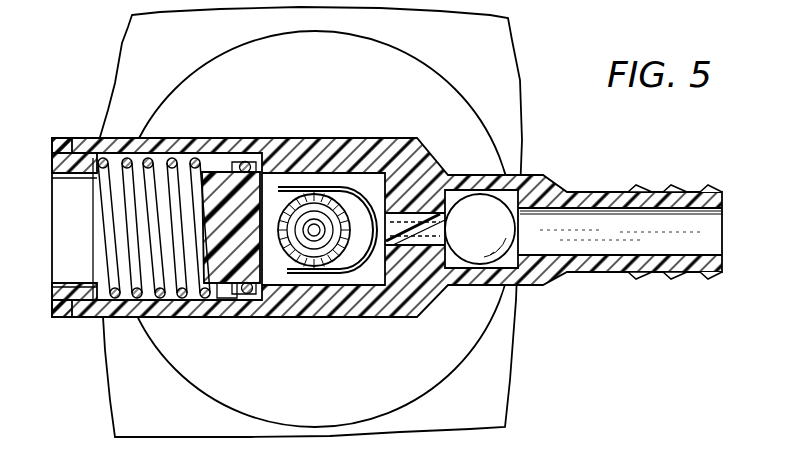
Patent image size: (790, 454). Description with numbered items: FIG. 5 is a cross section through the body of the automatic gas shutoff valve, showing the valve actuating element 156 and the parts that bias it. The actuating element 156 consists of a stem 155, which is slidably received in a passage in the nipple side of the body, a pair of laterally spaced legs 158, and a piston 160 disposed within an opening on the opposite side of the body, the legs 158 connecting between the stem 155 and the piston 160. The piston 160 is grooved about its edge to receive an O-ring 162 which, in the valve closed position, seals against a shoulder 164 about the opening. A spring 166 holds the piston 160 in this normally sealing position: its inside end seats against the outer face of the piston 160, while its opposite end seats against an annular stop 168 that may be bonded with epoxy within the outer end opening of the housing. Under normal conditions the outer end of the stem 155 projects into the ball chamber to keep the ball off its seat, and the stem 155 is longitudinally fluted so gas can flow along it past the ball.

The stem 155 is at (416, 220).
The valve actuating element 156 is at (195, 138).
The legs 158 is at (305, 185).
The piston 160 is at (225, 250).
The O-ring 162 is at (256, 288).
The shoulder 164 is at (238, 160).
The spring 166 is at (173, 317).
The annular stop 168 is at (53, 159).